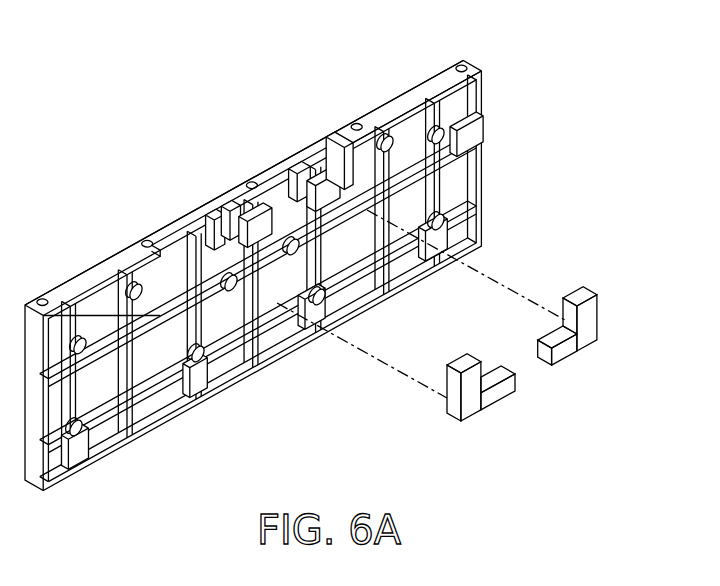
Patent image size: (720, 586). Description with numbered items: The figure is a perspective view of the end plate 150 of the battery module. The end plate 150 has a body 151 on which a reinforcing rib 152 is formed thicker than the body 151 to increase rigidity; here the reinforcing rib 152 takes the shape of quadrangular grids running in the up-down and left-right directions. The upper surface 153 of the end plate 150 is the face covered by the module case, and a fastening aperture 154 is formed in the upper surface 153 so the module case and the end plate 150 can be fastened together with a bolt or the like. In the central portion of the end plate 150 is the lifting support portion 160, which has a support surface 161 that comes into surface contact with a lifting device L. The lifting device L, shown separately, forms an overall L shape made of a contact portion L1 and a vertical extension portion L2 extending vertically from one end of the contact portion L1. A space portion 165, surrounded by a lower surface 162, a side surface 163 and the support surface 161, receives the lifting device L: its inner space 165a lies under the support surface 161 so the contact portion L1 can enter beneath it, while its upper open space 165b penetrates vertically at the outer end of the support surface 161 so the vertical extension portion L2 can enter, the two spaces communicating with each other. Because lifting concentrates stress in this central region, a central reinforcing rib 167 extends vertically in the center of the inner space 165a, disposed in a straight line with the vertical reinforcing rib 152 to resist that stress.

The end plate 150 is at (63, 40).
The body 151 is at (456, 188).
The reinforcing rib 152 is at (446, 172).
The upper surface 153 is at (414, 92).
The fastening aperture 154 is at (465, 68).
The lifting support portion 160 is at (148, 214).
The support surface 161 is at (305, 205).
The lower surface 162 is at (333, 200).
The side surface 163 is at (357, 138).
The space portion 165 is at (204, 93).
The inner space 165a is at (219, 198).
The upper open space 165b is at (183, 237).
The central reinforcing rib 167 is at (265, 205).
The lifting device L is at (655, 306).
The contact portion L1 is at (556, 345).
The vertical extension portion L2 is at (572, 322).